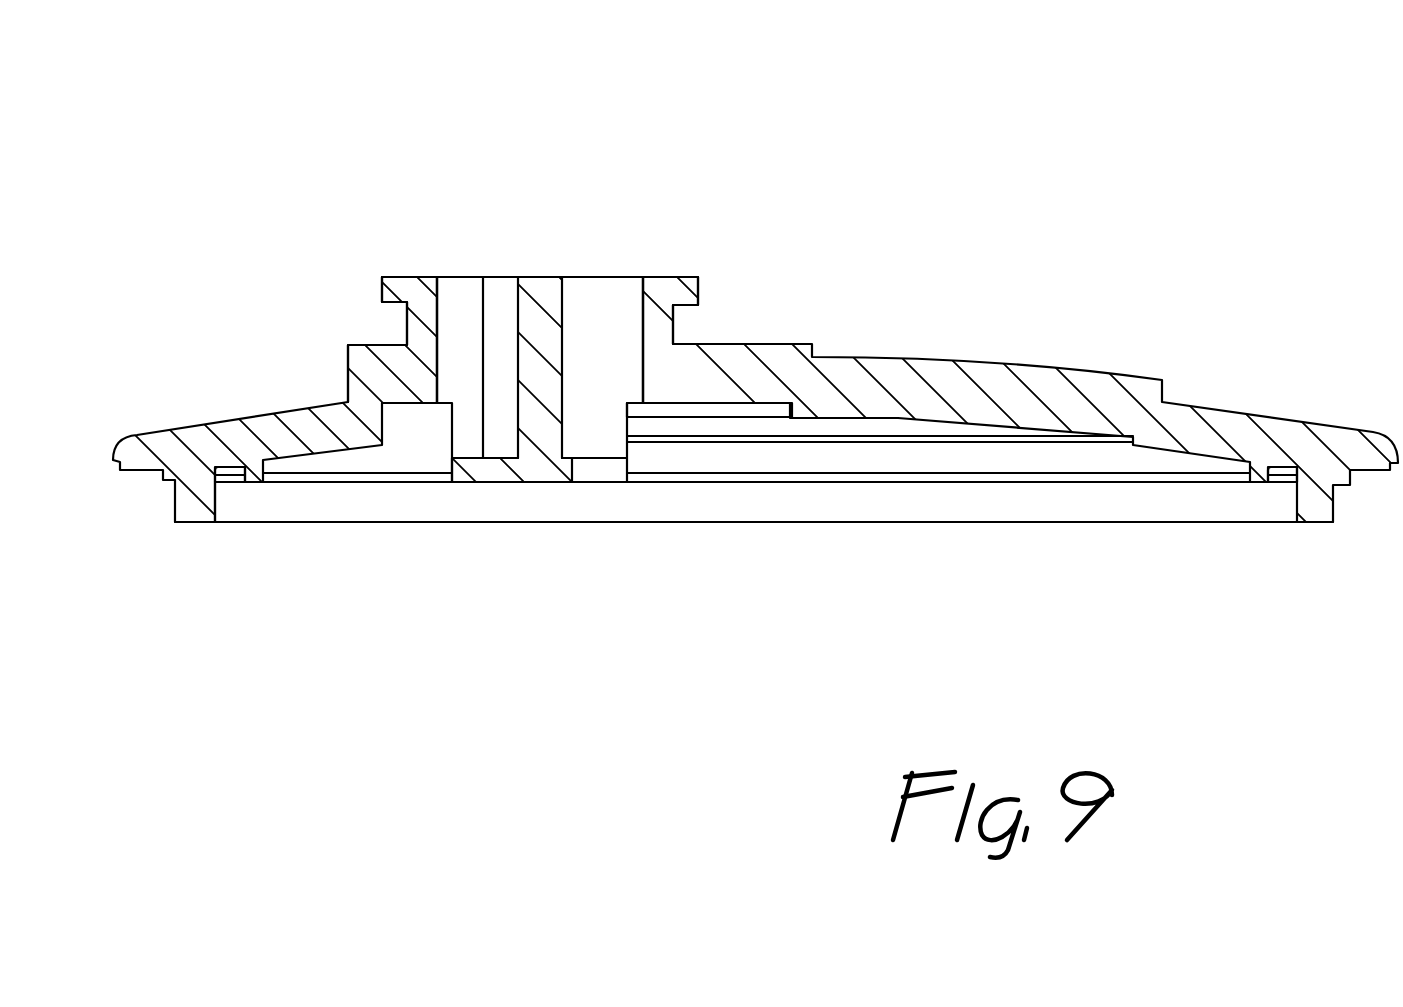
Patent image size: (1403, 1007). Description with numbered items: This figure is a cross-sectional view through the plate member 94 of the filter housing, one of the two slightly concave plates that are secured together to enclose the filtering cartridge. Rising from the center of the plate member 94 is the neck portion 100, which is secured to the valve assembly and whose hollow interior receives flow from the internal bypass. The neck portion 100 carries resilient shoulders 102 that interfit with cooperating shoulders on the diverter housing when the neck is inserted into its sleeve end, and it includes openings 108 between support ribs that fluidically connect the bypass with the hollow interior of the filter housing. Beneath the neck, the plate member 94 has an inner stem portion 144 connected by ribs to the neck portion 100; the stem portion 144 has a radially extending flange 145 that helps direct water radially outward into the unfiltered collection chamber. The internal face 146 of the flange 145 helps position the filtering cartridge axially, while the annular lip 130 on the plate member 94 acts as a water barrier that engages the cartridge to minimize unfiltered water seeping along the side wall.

The first plate member 94 is at (921, 330).
The neck portion 100 is at (660, 345).
The shoulders 102 is at (395, 290).
The openings 108 is at (445, 390).
The annular lip 130 is at (297, 477).
The inner stem portion 144 is at (537, 328).
The radially extending flange 145 is at (483, 430).
The internal face 146 is at (497, 480).